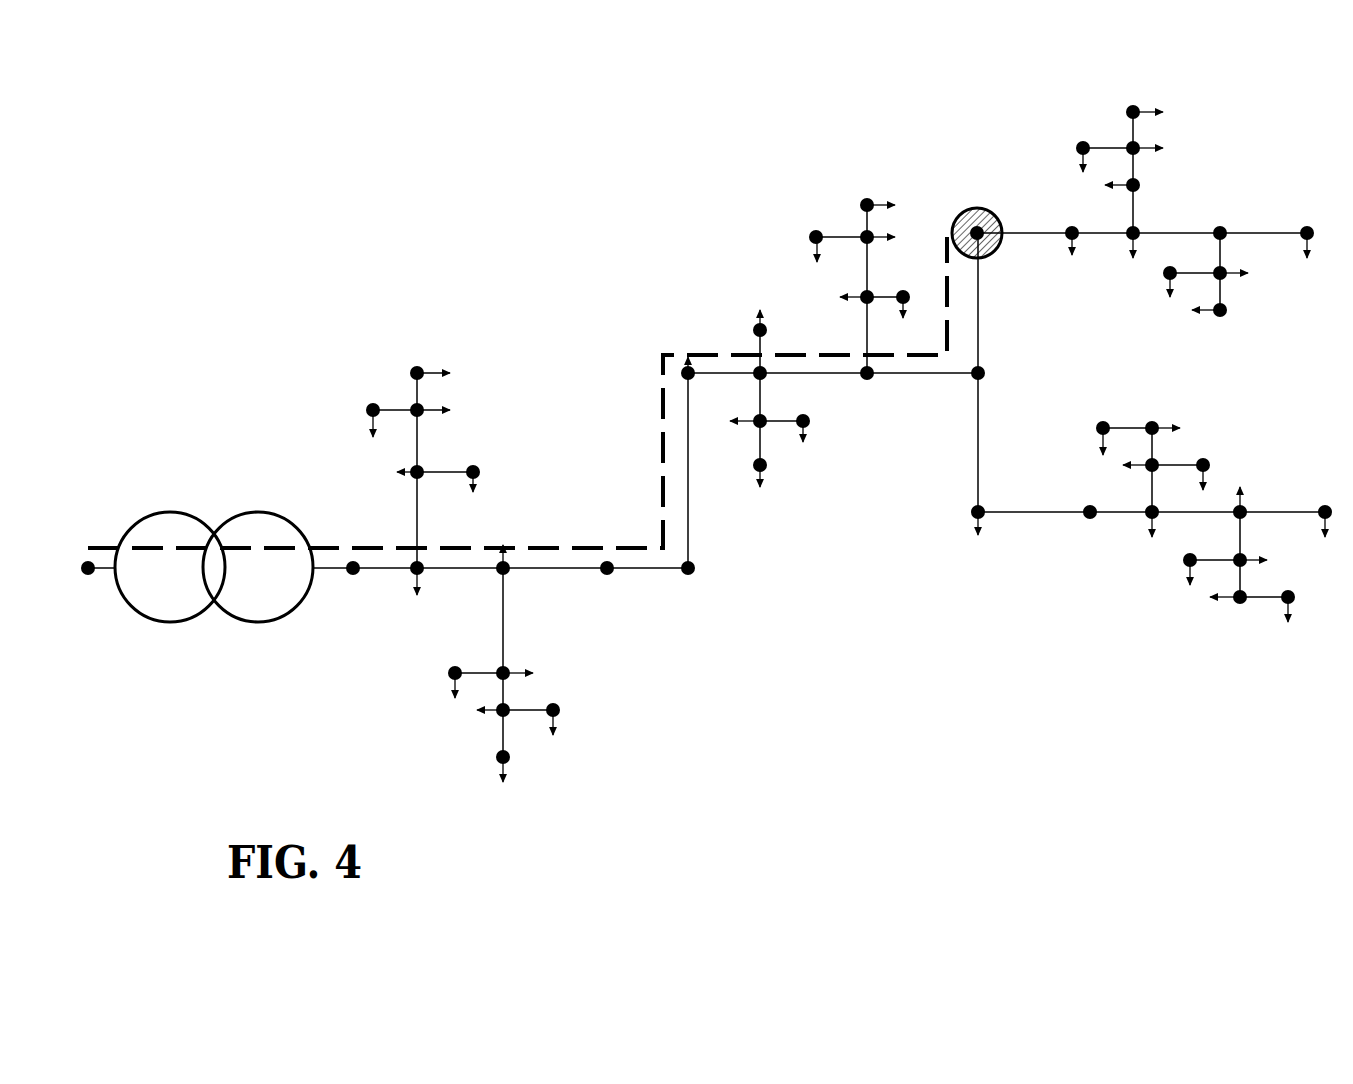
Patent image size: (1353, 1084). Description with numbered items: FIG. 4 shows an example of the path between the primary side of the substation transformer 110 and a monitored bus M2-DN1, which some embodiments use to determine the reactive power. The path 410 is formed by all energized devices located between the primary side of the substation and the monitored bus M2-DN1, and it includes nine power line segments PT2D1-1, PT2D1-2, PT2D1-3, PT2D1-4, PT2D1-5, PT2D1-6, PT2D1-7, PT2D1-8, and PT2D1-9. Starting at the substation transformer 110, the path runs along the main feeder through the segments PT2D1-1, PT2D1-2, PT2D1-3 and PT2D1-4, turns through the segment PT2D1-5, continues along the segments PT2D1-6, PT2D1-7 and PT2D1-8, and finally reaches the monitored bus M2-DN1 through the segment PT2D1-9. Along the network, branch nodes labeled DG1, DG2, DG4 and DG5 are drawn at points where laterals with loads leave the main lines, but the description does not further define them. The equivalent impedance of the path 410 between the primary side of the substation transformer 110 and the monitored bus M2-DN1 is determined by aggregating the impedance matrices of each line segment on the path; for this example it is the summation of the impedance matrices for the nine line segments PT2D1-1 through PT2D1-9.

The substation transformer 110 is at (168, 510).
The power transmission path 410 is at (657, 403).
The power line segment PT2D1-1 is at (377, 563).
The power line segment PT2D1-2 is at (477, 563).
The power line segment PT2D1-3 is at (570, 536).
The power line segment PT2D1-4 is at (642, 570).
The power line segment PT2D1-5 is at (688, 508).
The power line segment PT2D1-6 is at (722, 374).
The power line segment PT2D1-7 is at (805, 373).
The power line segment PT2D1-8 is at (931, 379).
The power line segment PT2D1-9 is at (980, 333).
The distributed generator DG1 is at (621, 586).
The distributed generator DG2 is at (870, 380).
The distributed generator DG4 is at (1218, 227).
The distributed generator DG5 is at (1092, 521).
The monitored bus M2-DN1 is at (955, 220).